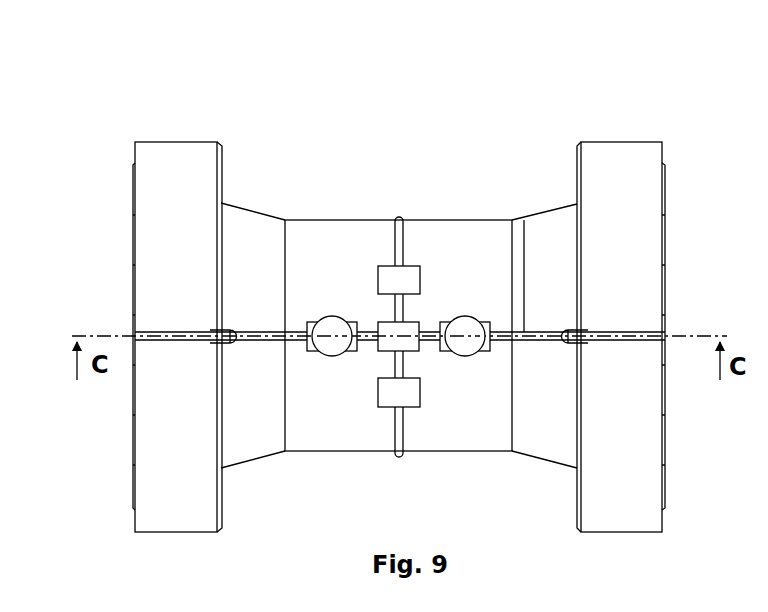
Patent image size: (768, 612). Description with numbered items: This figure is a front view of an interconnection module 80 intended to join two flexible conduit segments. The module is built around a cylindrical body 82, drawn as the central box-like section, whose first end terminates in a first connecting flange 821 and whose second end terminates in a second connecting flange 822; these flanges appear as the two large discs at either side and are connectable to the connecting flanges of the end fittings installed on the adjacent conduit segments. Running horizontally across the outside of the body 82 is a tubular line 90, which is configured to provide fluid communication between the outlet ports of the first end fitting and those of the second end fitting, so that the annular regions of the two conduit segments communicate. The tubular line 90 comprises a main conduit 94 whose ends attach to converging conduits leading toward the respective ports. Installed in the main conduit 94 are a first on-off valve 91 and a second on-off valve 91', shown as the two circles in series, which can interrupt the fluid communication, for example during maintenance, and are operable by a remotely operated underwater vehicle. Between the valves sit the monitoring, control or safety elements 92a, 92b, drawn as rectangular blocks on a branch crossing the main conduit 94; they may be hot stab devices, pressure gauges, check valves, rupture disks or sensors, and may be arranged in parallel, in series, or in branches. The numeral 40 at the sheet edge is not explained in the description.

The interconnection module 80 is at (287, 141).
The cylindrical body 82 is at (332, 236).
The tubular line 90 is at (175, 328).
The first on-off valve 91 is at (331, 418).
The second on-off valve 91' is at (470, 417).
The monitoring, control or safety element 92a is at (410, 272).
The monitoring, control or safety element 92b is at (387, 397).
The main conduit 94 is at (524, 222).
The first connecting flange 821 is at (186, 507).
The second connecting flange 822 is at (613, 505).
The element 40 is at (357, 606).